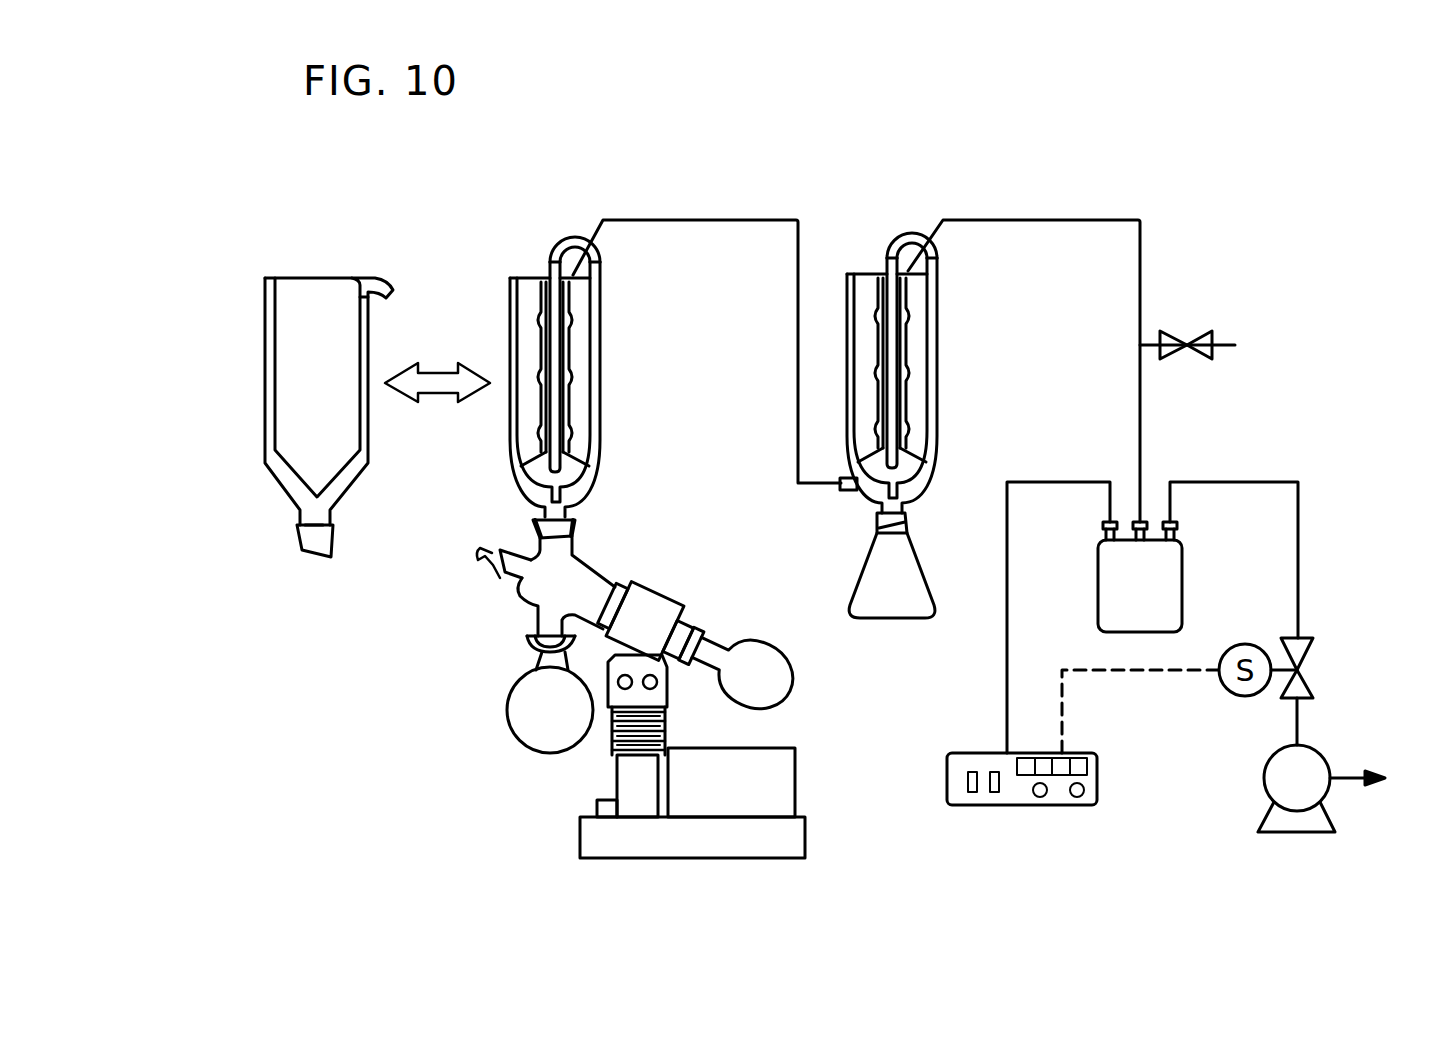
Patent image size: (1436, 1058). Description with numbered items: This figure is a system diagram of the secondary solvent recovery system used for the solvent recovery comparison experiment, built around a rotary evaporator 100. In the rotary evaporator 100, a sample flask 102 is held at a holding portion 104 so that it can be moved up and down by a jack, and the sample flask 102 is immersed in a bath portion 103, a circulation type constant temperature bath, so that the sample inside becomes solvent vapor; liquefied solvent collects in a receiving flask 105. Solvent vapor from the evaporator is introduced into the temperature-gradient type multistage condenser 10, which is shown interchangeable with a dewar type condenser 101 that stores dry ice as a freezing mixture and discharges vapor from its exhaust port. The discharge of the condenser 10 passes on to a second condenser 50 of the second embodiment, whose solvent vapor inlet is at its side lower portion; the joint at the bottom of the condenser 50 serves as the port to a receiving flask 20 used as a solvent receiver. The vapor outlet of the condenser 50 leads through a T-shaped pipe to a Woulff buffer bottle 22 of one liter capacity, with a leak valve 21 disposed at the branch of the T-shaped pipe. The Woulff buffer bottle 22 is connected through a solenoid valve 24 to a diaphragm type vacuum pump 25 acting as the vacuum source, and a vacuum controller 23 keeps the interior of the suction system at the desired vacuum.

The temperature-gradient type multistage condenser 10 is at (603, 360).
The receiving flask 20 is at (935, 530).
The leak valve 21 is at (1203, 330).
The Woulff buffer bottle 22 is at (1183, 561).
The vacuum controller 23 is at (1098, 766).
The solenoid valve 24 is at (1313, 647).
The vacuum pump 25 is at (1322, 759).
The temperature-gradient type multistage condenser 50 is at (940, 353).
The rotary evaporator 100 is at (588, 553).
The dewar type condenser 101 is at (368, 352).
The sample flask 102 is at (760, 650).
The bath portion 103 is at (795, 787).
The holding portion 104 is at (643, 597).
The receiving flask 105 is at (520, 727).